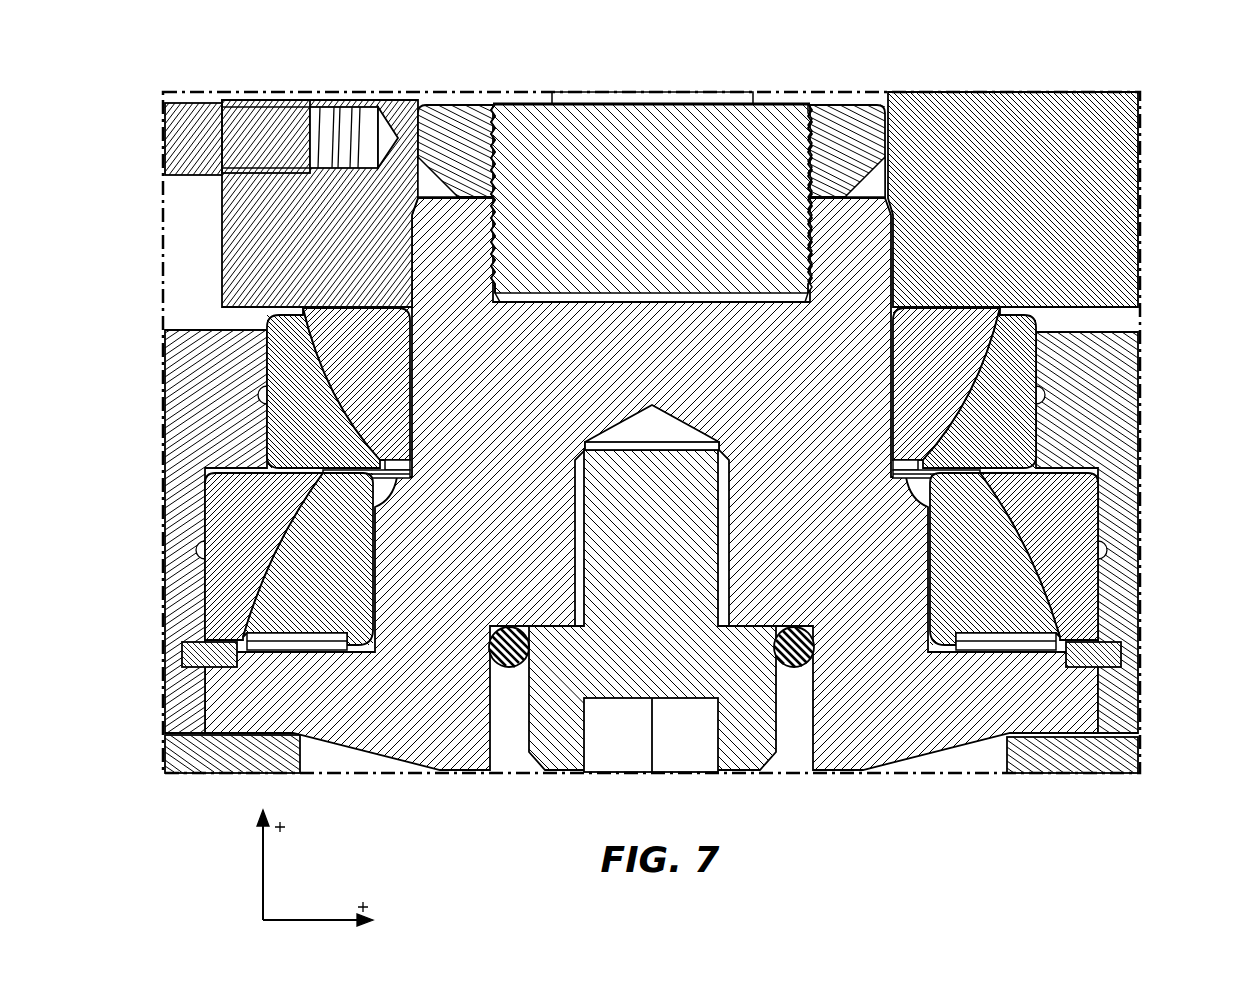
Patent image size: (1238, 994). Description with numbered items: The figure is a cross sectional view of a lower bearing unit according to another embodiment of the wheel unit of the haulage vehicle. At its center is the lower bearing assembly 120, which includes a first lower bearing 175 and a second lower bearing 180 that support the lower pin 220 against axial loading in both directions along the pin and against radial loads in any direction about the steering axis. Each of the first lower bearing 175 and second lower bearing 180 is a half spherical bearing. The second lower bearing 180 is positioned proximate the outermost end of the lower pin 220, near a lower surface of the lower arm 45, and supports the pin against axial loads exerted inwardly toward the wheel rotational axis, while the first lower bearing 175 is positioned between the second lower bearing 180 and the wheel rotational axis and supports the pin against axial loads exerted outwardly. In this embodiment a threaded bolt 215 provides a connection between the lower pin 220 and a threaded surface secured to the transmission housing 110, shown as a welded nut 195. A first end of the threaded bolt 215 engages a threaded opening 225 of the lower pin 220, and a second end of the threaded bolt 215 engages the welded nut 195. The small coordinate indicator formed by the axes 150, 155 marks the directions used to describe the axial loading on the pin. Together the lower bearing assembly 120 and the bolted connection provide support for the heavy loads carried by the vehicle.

The lower arm 45 is at (190, 605).
The transmission housing 110 is at (925, 128).
The lower bearing assembly 120 is at (972, 806).
The first axis 150 is at (317, 918).
The second axis 155 is at (265, 858).
The first lower bearing 175 is at (310, 388).
The second lower bearing 180 is at (310, 570).
The welded nut 195 is at (460, 133).
The threaded bolt 215 is at (575, 157).
The lower pin 220 is at (753, 590).
The threaded opening 225 is at (493, 257).